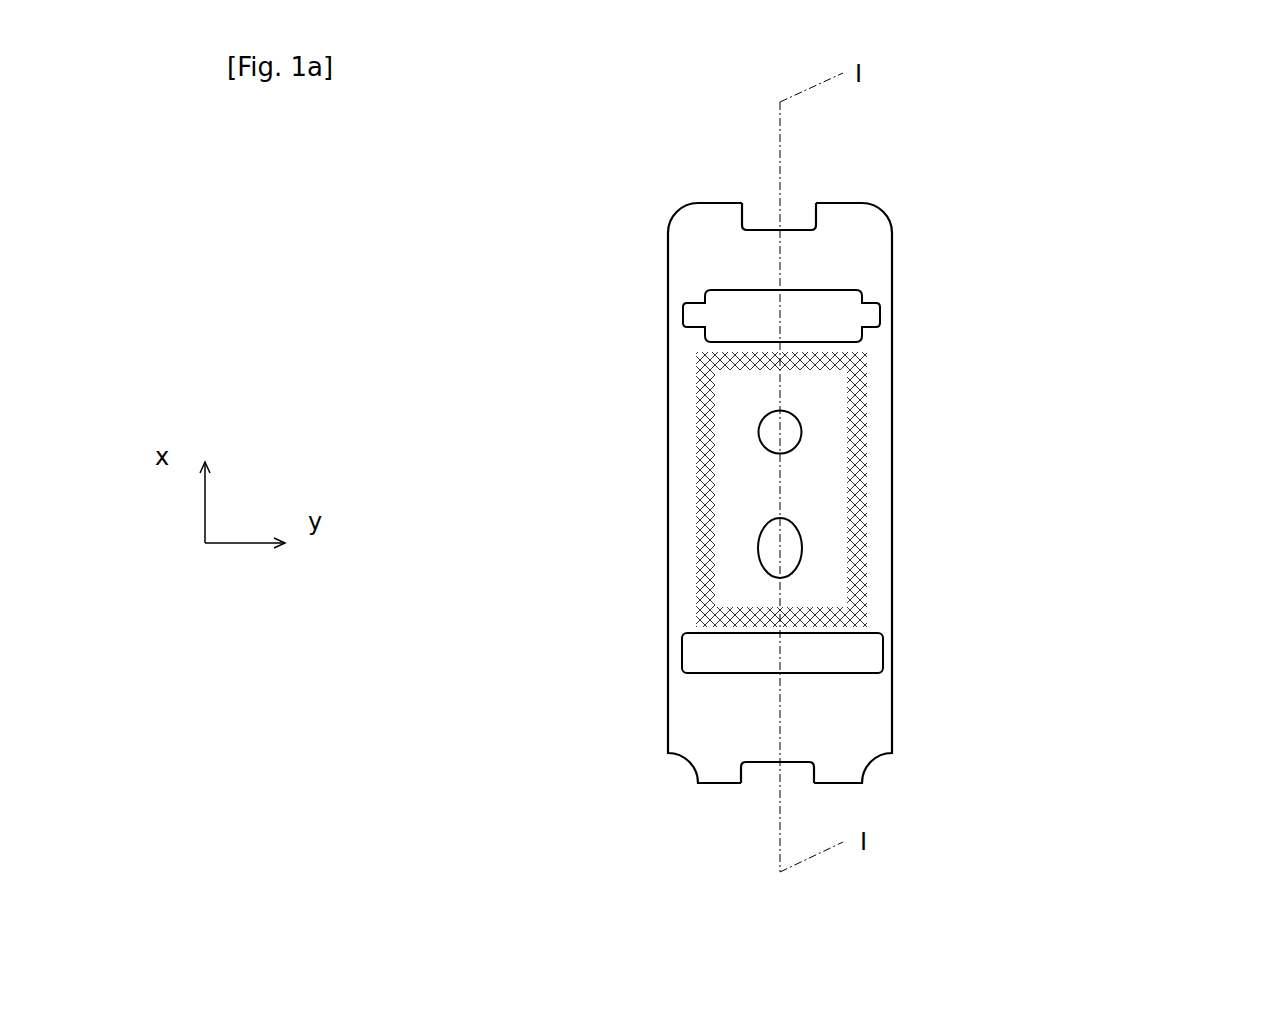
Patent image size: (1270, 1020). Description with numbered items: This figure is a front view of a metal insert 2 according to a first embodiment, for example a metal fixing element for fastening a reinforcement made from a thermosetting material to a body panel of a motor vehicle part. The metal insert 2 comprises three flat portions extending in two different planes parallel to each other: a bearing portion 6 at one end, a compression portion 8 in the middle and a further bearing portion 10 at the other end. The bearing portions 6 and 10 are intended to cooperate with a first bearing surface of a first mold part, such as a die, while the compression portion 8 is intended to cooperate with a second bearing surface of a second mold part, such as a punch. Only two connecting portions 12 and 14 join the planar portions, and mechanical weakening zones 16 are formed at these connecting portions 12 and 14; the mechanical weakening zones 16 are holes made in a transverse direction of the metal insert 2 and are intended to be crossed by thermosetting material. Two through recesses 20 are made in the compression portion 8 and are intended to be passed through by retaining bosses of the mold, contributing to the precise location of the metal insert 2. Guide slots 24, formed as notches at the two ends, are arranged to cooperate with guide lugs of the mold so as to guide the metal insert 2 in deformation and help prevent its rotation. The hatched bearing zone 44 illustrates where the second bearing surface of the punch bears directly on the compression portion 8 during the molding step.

The metal insert 2 is at (967, 253).
The bearing portion 6 is at (692, 232).
The compression portion 8 is at (671, 495).
The bearing portion 10 is at (671, 715).
The connecting portion 12 is at (672, 316).
The connecting portion 14 is at (813, 647).
The mechanical weakening zone 16 is at (866, 476).
The through recess 20 is at (781, 558).
The guide slot 24 is at (772, 218).
The bearing zone 44 is at (700, 388).